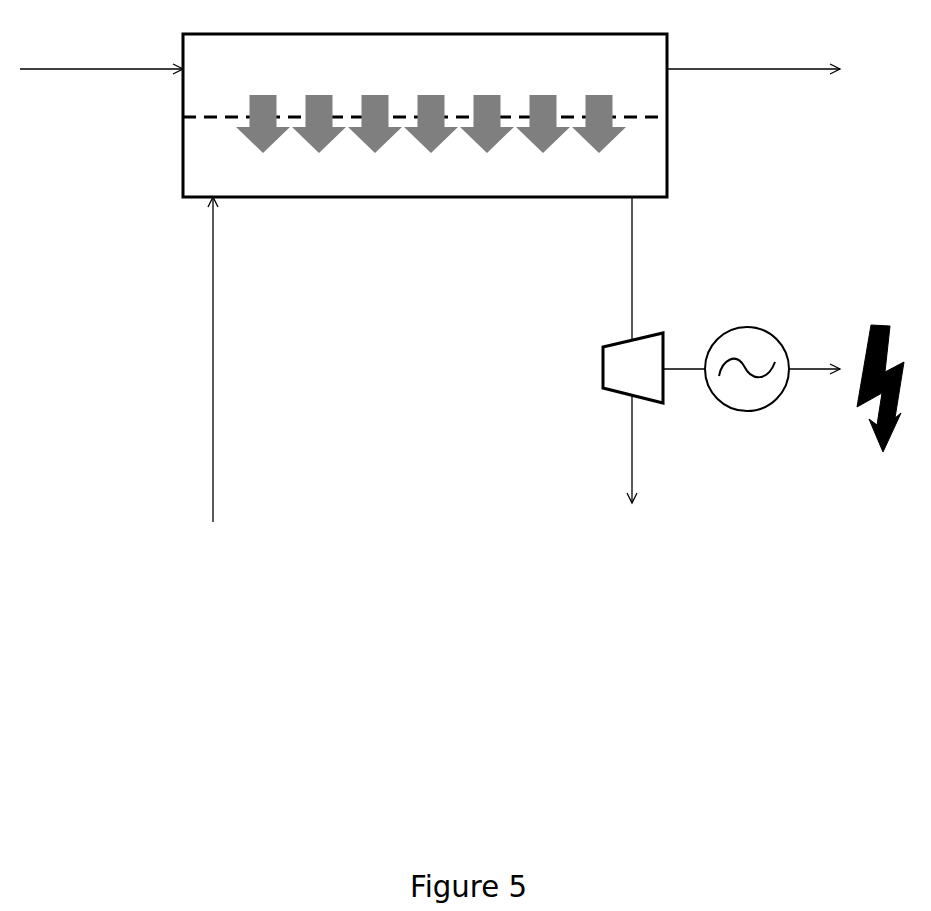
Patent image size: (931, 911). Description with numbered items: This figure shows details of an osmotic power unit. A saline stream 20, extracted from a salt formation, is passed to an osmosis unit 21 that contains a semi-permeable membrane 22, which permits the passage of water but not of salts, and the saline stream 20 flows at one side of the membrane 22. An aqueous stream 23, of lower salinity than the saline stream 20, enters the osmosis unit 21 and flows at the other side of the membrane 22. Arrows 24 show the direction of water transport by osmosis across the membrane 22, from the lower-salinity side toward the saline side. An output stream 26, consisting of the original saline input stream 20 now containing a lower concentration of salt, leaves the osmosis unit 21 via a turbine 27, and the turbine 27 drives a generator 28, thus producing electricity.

The saline stream 20 is at (192, 359).
The osmosis unit 21 is at (585, 207).
The semi-permeable membrane 22 is at (211, 125).
The aqueous stream 23 is at (101, 48).
The arrows 24 is at (393, 157).
The output stream 26 is at (659, 350).
The turbine 27 is at (583, 373).
The generator 28 is at (755, 432).